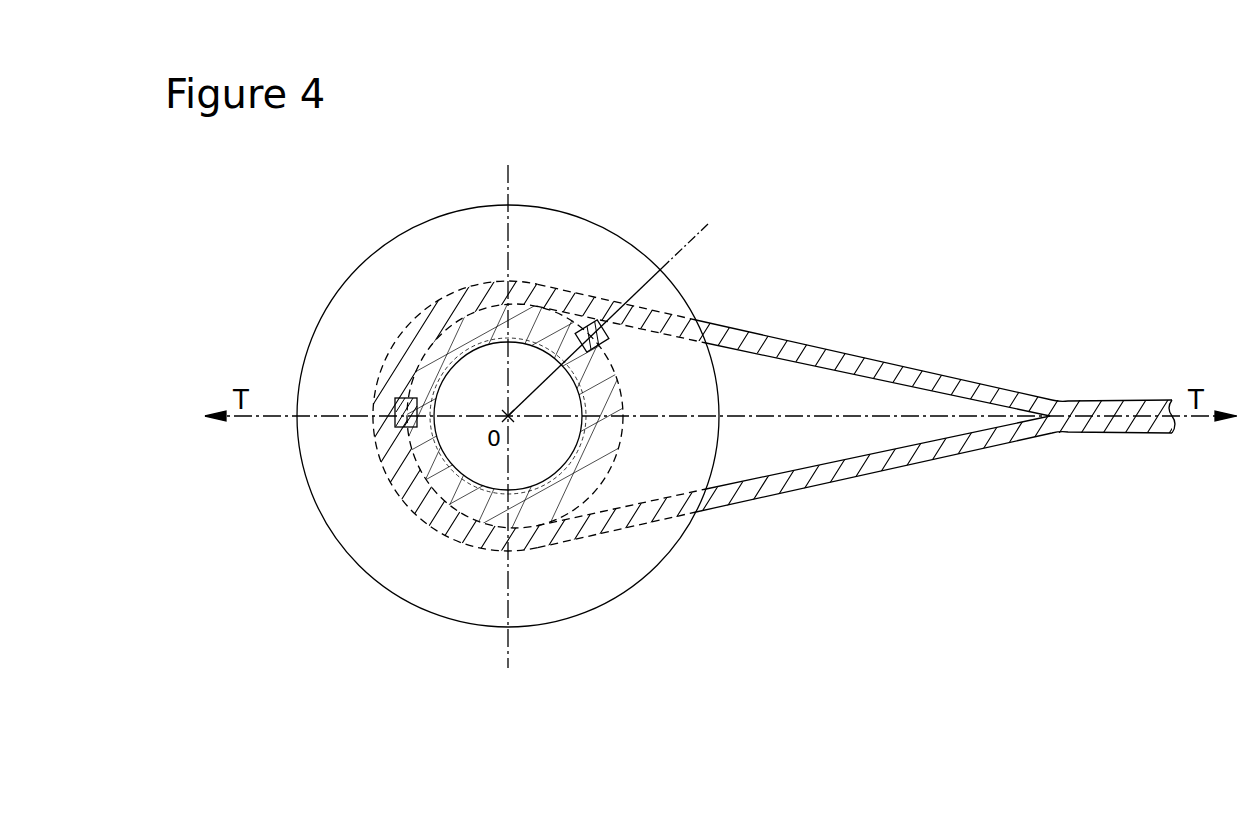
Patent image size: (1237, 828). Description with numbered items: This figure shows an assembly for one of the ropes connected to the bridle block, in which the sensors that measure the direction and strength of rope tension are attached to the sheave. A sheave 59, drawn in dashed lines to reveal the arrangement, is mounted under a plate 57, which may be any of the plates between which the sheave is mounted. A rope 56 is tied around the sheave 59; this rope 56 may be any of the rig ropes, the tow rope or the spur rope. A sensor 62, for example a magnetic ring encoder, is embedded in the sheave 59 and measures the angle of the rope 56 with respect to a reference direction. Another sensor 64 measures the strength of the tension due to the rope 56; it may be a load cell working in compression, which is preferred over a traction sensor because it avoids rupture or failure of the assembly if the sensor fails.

The rope 56 is at (786, 345).
The plate 57 is at (548, 227).
The sheave 59 is at (477, 513).
The sensor 62 is at (610, 333).
The sensor 64 is at (404, 398).